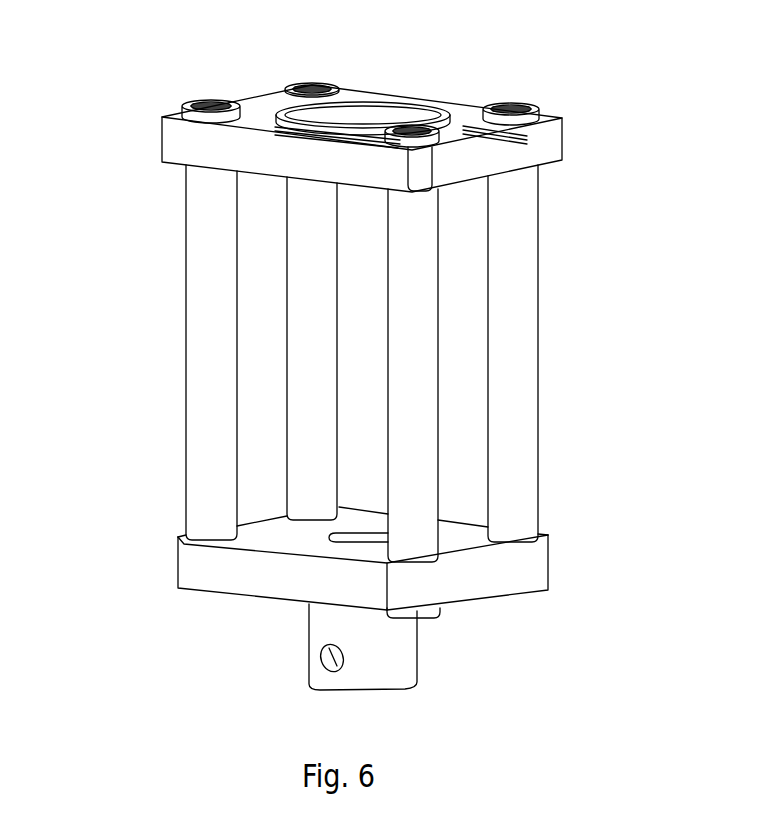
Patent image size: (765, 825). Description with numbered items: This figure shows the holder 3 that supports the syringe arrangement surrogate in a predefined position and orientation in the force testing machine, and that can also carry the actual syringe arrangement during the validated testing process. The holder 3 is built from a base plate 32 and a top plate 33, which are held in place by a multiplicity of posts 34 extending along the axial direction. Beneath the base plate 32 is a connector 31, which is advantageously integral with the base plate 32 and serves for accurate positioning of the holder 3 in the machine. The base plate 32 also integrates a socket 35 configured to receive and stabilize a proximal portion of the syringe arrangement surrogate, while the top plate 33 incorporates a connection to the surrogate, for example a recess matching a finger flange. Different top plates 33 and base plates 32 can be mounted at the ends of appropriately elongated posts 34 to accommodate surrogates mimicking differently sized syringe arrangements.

The holder 3 is at (102, 186).
The connector 31 is at (391, 658).
The base plate 32 is at (500, 581).
The top plate 33 is at (542, 148).
The posts 34 is at (310, 346).
The socket 35 is at (350, 539).